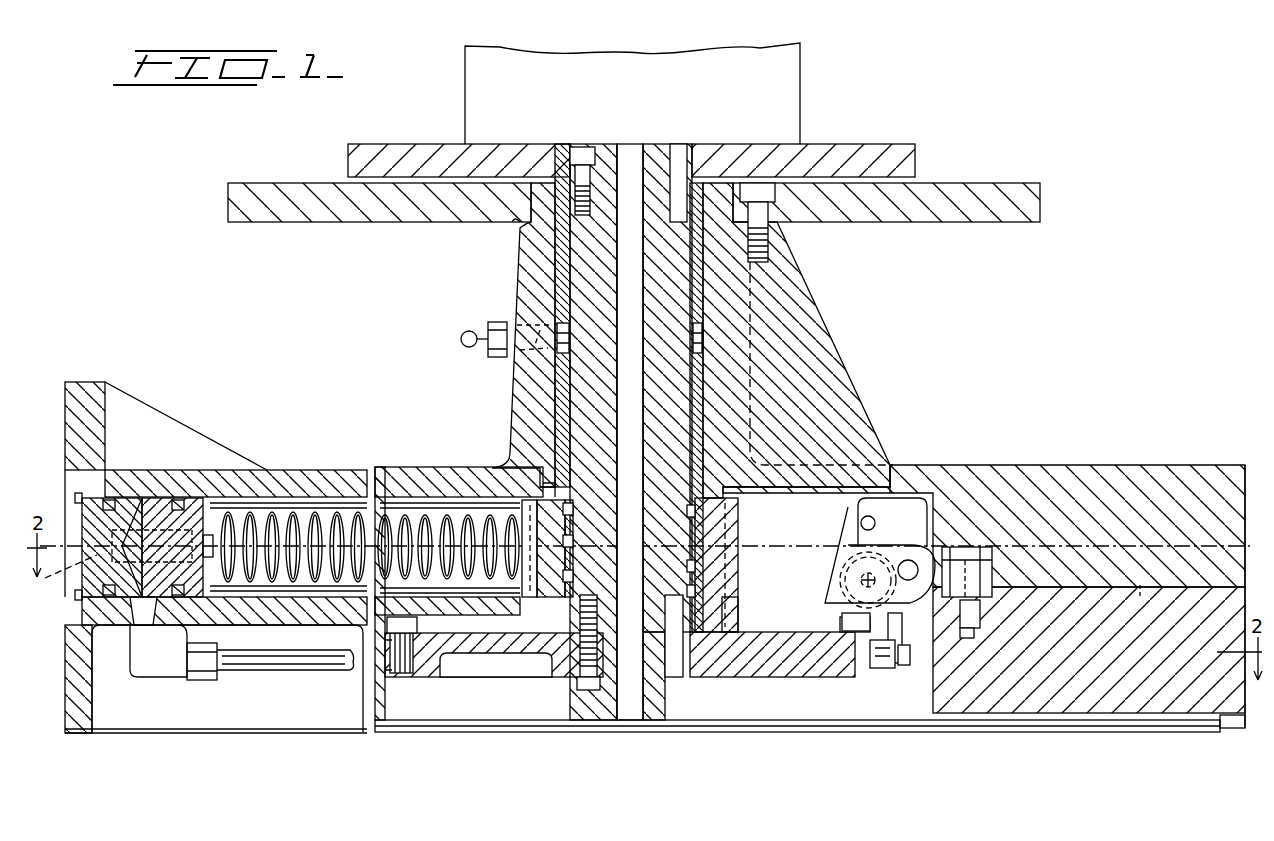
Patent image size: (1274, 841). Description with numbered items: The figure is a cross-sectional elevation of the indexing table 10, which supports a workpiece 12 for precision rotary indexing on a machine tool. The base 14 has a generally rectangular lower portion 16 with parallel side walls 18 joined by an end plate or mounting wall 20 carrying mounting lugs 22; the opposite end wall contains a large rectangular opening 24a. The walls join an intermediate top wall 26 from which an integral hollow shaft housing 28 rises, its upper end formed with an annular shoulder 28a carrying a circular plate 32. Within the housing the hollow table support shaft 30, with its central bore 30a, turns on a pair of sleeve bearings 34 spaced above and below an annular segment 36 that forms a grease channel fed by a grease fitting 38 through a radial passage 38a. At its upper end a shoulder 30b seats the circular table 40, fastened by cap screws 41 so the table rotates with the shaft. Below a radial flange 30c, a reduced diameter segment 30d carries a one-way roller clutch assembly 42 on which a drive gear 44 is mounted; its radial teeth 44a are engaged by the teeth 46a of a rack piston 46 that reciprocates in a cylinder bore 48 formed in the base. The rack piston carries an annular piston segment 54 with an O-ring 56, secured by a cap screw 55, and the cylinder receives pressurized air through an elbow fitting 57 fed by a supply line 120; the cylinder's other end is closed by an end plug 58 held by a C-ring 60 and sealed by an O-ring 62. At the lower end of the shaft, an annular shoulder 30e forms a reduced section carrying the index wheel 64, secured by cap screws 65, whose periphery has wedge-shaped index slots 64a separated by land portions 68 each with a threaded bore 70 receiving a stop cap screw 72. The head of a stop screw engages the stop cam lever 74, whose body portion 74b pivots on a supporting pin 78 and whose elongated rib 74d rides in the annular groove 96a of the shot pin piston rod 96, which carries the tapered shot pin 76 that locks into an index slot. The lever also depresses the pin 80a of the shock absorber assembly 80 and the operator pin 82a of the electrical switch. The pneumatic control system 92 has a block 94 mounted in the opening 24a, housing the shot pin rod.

The indexing table 10 is at (647, 782).
The workpiece 12 is at (785, 97).
The base 14 is at (1250, 462).
The lower portion 16 is at (760, 733).
The side walls 18 is at (255, 716).
The end plate or mounting wall 20 is at (65, 705).
The mounting lugs 22 is at (62, 405).
The rectangular opening or slot 24a is at (1140, 592).
The top wall 26 is at (400, 498).
The shaft housing 28 is at (525, 265).
The annular outer shoulder or recess 28a is at (515, 225).
The table support shaft 30 is at (705, 282).
The central bore 30a is at (620, 362).
The annular recess or shoulder 30b is at (666, 148).
The radial flange 30c is at (587, 487).
The reduced diameter shaft segment 30d is at (722, 605).
The annular shoulder 30e is at (675, 677).
The circular plate 32 is at (1040, 190).
The sleeve bearings 34 is at (555, 300).
The annular segment 36 is at (703, 340).
The grease fitting 38 is at (460, 340).
The radial passage 38a is at (520, 352).
The circular table 40 is at (905, 160).
The cap screws 41 is at (578, 147).
The one-way roller clutch assembly 42 is at (560, 580).
The drive gear 44 is at (516, 498).
The radial teeth 44a is at (738, 512).
The rack piston 46 is at (262, 598).
The teeth 46a is at (262, 520).
The cylinder bore 48 is at (215, 498).
The piston segment 54 is at (150, 498).
The cap screw 55 is at (80, 592).
The O-ring 56 is at (175, 498).
The elbow fitting 57 is at (153, 660).
The end plug 58 is at (80, 520).
The C-ring 60 is at (82, 612).
The sealing O-ring 62 is at (110, 500).
The index wheel 64 is at (470, 655).
The index grooves or slots 64a is at (870, 677).
The cap screws 65 is at (585, 690).
The land portion 68 is at (390, 675).
The threaded bore 70 is at (405, 675).
The cap screw 72 is at (417, 626).
The stop cam lever 74 is at (895, 495).
The body portion 74b is at (918, 570).
The elongated rib 74d is at (972, 632).
The shot pin 76 is at (850, 631).
The supporting pin 78 is at (955, 575).
The shock absorber assembly 80 is at (840, 552).
The pin 80a is at (858, 580).
The operator pin 82a is at (862, 520).
The pneumatic control system 92 is at (1251, 586).
The block 94 is at (1133, 641).
The shot pin piston rod 96 is at (895, 668).
The annular groove 96a is at (910, 655).
The supply line 120 is at (250, 666).